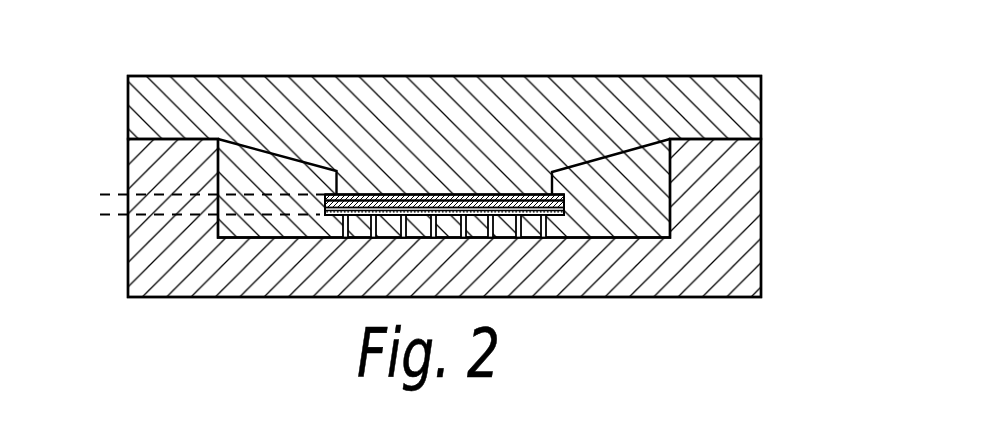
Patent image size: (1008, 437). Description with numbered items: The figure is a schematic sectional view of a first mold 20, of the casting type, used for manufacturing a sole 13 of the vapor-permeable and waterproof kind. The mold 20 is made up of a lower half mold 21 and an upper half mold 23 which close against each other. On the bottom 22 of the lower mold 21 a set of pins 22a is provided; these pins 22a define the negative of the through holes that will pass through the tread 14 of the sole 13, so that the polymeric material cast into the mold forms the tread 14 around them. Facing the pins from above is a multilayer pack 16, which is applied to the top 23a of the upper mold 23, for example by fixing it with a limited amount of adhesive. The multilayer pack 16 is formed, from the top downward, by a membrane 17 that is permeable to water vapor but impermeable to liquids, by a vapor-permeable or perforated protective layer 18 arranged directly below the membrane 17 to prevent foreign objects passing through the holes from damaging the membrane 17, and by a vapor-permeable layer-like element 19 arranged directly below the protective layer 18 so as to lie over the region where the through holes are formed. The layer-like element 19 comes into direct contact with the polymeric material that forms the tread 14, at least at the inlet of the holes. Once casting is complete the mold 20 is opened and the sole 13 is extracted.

The sole 13 is at (217, 177).
The tread 14 is at (650, 203).
The multilayer pack 16 is at (95, 195).
The membrane 17 is at (367, 195).
The protective layer 18 is at (443, 195).
The layer-like element 19 is at (572, 238).
The mold 20 is at (777, 158).
The lower mold 21 is at (728, 257).
The bottom 22 is at (612, 238).
The pins 22a is at (345, 228).
The upper mold 23 is at (507, 107).
The top 23a is at (408, 195).